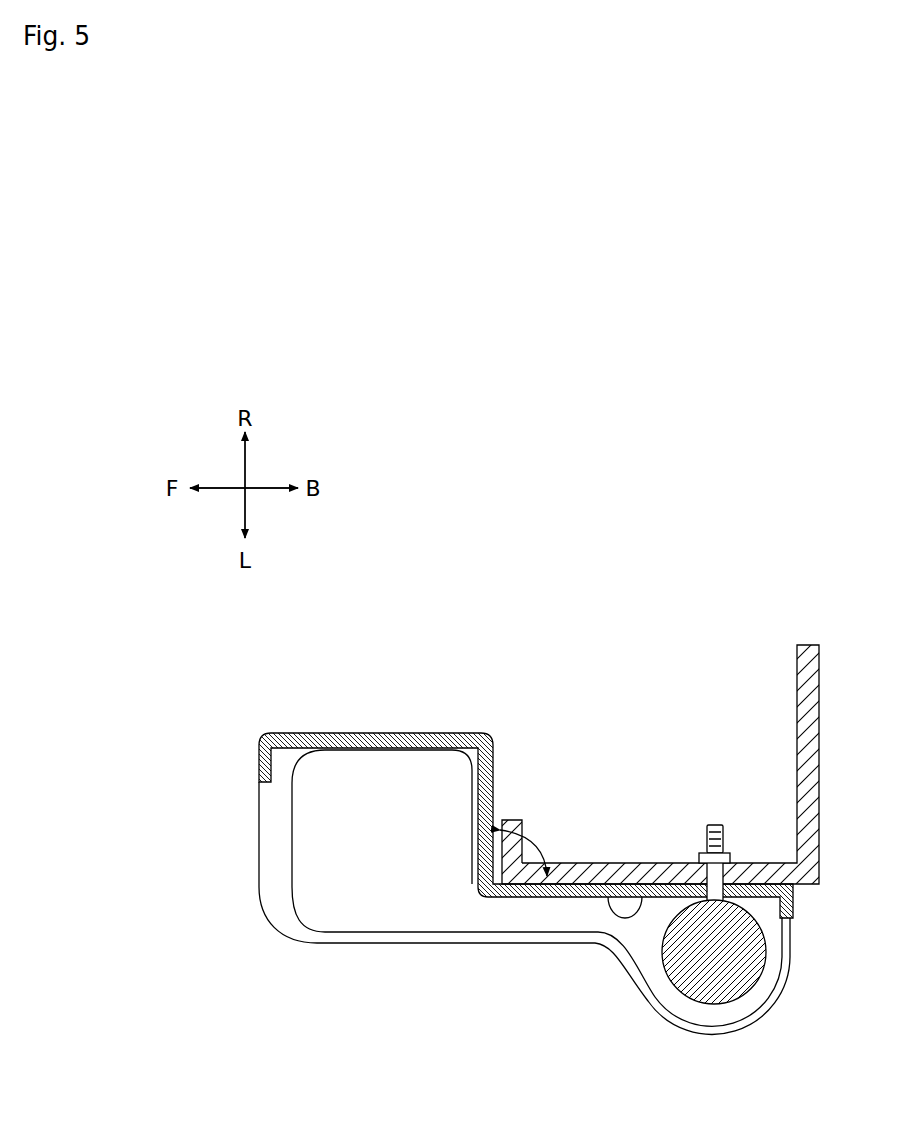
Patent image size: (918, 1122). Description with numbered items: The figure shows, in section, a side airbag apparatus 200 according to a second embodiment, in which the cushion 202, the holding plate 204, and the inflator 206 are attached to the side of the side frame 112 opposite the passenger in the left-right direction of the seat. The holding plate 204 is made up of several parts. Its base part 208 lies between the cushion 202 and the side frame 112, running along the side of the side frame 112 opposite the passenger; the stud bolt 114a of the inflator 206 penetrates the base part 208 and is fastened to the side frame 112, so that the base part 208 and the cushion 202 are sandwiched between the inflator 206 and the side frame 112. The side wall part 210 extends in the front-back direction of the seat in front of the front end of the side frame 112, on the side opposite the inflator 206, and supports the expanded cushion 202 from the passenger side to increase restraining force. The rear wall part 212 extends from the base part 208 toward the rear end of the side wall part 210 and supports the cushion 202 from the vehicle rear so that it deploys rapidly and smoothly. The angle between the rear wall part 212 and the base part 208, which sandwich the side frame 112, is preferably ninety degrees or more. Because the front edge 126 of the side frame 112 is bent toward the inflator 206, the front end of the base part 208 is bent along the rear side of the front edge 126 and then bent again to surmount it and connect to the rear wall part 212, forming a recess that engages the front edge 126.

The side airbag apparatus 200 is at (760, 594).
The cushion 202 is at (605, 940).
The holding plate 204 is at (260, 740).
The inflator 206 is at (713, 1005).
The base part 208 is at (620, 897).
The side wall part 210 is at (384, 733).
The rear wall part 212 is at (473, 843).
The front edge 126 is at (513, 818).
The side frame 112 is at (807, 888).
The stud bolt 114a is at (713, 823).